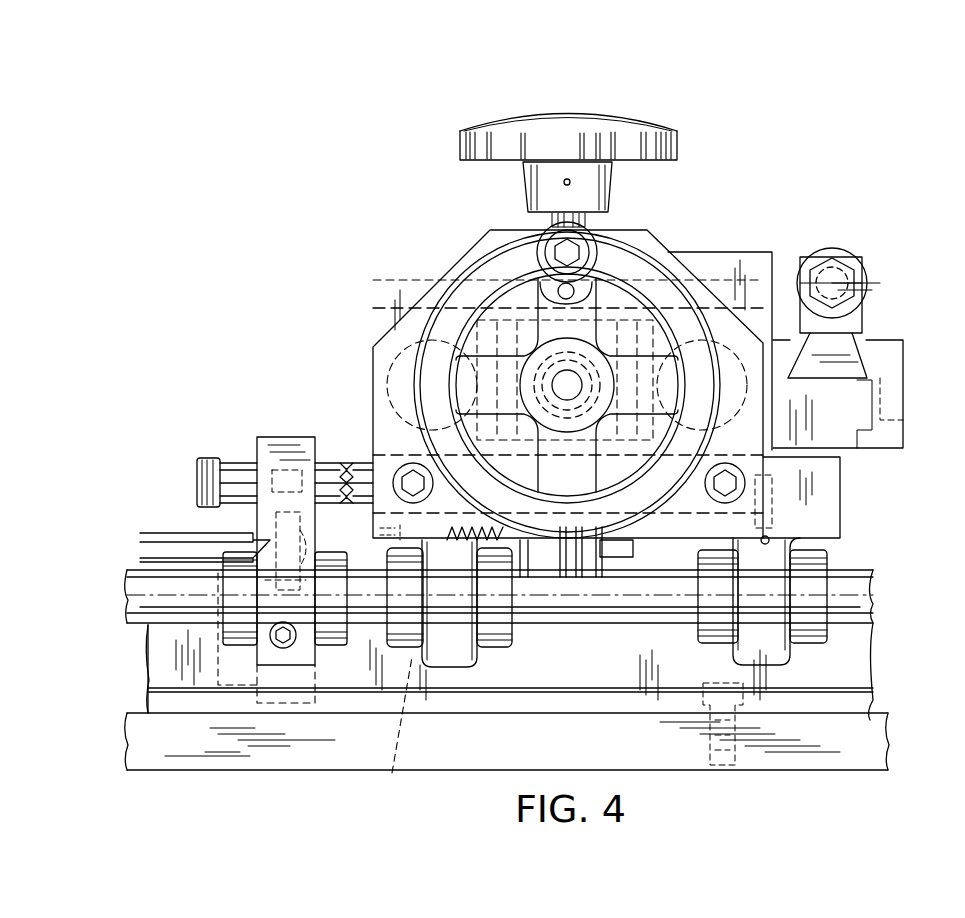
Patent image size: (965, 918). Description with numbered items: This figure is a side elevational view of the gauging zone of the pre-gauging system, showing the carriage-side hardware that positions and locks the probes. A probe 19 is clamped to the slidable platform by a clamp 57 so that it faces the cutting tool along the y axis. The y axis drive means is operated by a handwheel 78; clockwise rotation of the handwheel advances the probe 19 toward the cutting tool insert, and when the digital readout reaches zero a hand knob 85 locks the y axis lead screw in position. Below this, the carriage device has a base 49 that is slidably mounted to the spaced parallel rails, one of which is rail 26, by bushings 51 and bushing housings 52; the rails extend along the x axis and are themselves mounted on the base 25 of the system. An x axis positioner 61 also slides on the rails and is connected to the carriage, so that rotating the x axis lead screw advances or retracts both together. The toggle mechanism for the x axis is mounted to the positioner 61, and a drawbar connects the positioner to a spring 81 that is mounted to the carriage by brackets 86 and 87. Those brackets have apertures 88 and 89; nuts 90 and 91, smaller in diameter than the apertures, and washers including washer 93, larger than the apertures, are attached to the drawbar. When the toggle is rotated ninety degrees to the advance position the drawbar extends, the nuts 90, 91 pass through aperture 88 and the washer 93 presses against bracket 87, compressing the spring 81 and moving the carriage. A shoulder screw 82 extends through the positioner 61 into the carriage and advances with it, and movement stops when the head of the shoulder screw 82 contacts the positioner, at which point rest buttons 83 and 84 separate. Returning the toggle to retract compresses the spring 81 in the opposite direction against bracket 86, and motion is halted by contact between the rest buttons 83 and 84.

The hand knob 85 is at (502, 122).
The handwheel 78 is at (650, 272).
The probe 19 is at (810, 262).
The clamp 57 is at (905, 428).
The base 49 is at (835, 492).
The rail 26 is at (858, 577).
The bushing 51 is at (817, 632).
The bushing housing 52 is at (800, 658).
The aperture 88 is at (476, 660).
The base 25 is at (832, 762).
The bracket 86 is at (315, 695).
The x axis positioner 61 is at (272, 442).
The shoulder screw 82 is at (208, 458).
The rest button 83 is at (330, 468).
The rest button 84 is at (353, 465).
The nut 90 is at (368, 528).
The aperture 89 is at (633, 552).
The spring 81 is at (522, 572).
The washer 93 is at (565, 580).
The bracket 87 is at (582, 582).
The nut 91 is at (600, 553).